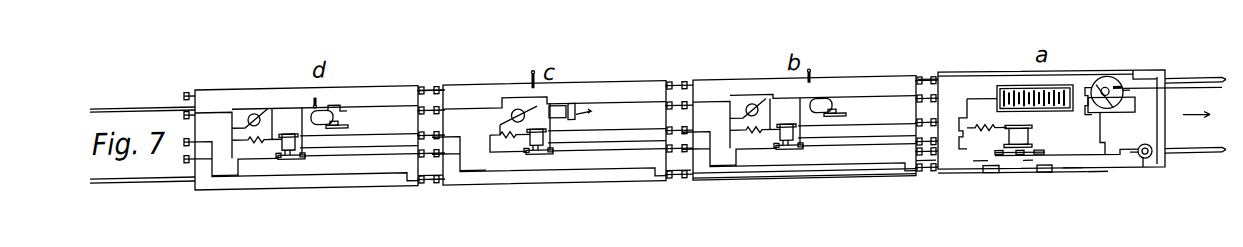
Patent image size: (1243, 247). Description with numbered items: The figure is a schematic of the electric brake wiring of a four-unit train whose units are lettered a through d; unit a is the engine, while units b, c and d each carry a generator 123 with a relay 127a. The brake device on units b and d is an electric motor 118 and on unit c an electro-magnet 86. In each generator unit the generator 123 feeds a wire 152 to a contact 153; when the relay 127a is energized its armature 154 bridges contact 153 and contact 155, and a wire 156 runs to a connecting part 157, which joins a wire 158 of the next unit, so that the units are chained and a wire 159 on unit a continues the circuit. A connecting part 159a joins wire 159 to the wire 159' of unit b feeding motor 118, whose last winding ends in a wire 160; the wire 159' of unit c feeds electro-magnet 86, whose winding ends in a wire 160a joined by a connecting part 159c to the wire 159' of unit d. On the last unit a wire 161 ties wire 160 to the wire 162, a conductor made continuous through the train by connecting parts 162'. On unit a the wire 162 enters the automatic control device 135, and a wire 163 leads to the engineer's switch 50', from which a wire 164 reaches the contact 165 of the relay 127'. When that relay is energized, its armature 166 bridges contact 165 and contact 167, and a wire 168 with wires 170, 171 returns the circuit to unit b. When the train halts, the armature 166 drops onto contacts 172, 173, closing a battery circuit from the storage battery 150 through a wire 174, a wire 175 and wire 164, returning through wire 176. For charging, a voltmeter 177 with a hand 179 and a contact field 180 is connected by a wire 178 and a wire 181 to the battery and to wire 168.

The wire 160 is at (539, 92).
The wire 160a is at (554, 62).
The generator 123 is at (485, 91).
The wire 162 is at (680, 110).
The connecting part 162' is at (697, 68).
The electric motor 118 is at (567, 81).
The wire 161 is at (574, 65).
The connecting part 159c is at (421, 93).
The wire 159' is at (637, 82).
The connecting part 159a is at (680, 88).
The wire 159 is at (939, 135).
The wire 156 is at (550, 155).
The relay 127a is at (539, 157).
The wire 152 is at (458, 171).
The contact 153 is at (500, 186).
The armature 154 is at (539, 184).
The contact 155 is at (608, 173).
The electro-magnet 86 is at (570, 90).
The connecting part 157 is at (688, 184).
The wire 158 is at (573, 184).
The wire 170 is at (804, 188).
The wire 171 is at (804, 192).
The wire 168 is at (963, 192).
The storage battery 150 is at (1025, 69).
The wire 178 is at (1105, 80).
The automatic control device 135 is at (1159, 61).
The voltmeter 177 is at (1172, 91).
The contact field 180 is at (1161, 102).
The hand 179 is at (1108, 128).
The wire 181 is at (1122, 108).
The wire 163 is at (1184, 126).
The relay 127' is at (1021, 134).
The contact 165 is at (1060, 142).
The wire 176 is at (981, 117).
The contact 167 is at (1057, 144).
The engineer's switch 50' is at (1152, 167).
The wire 164 is at (1122, 181).
The wire 174 is at (1090, 196).
The wire 175 is at (1078, 184).
The contact 172 is at (1048, 186).
The contact 173 is at (1023, 186).
The armature 166 is at (1015, 191).